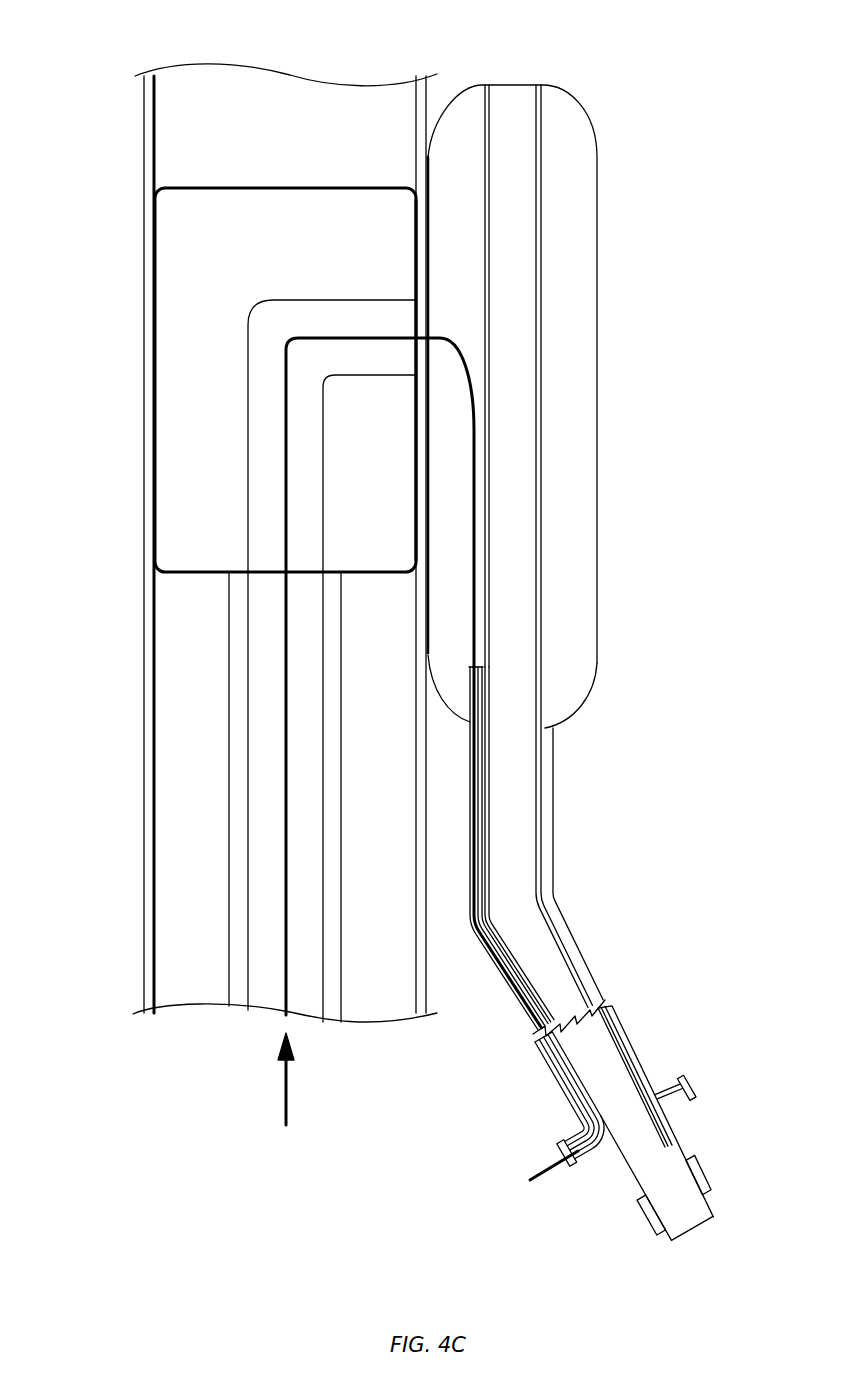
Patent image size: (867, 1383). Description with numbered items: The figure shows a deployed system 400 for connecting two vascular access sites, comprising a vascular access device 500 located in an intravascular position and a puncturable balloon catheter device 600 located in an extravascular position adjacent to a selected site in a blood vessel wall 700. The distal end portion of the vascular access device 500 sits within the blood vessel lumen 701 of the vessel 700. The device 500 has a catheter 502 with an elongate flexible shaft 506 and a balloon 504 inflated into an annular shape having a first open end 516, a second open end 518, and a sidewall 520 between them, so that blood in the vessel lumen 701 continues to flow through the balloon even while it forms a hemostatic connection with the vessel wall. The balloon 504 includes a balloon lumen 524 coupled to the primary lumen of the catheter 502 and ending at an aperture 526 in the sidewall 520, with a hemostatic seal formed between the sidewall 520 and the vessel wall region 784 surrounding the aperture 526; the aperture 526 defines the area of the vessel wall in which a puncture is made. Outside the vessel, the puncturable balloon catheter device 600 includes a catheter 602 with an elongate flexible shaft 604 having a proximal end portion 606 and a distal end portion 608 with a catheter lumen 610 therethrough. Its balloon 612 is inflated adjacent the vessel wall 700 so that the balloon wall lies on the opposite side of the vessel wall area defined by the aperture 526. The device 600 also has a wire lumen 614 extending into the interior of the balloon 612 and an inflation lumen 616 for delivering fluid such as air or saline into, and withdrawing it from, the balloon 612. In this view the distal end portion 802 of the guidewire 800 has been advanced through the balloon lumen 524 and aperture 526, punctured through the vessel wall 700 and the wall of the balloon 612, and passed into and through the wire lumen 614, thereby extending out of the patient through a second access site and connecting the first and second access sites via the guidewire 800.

The system 400 is at (654, 55).
The vascular access device 500 is at (184, 620).
The catheter 502 is at (221, 734).
The balloon 504 is at (190, 441).
The elongate flexible shaft 506 is at (268, 687).
The first open end 516 is at (355, 584).
The second open end 518 is at (273, 181).
The sidewall 520 is at (414, 511).
The balloon lumen 524 is at (275, 331).
The aperture 526 is at (398, 325).
The puncturable balloon catheter device 600 is at (596, 737).
The catheter 602 is at (615, 1177).
The elongate flexible shaft 604 is at (541, 421).
The proximal end portion 606 is at (737, 1110).
The distal end portion 608 is at (641, 335).
The catheter lumen 610 is at (513, 788).
The balloon 612 is at (575, 264).
The wire lumen 614 is at (478, 816).
The inflation lumen 616 is at (553, 906).
The blood vessel wall 700 is at (148, 856).
The blood vessel lumen 701 is at (185, 123).
The vessel wall region 784 is at (414, 248).
The guidewire 800 is at (283, 536).
The distal end portion 802 is at (540, 1171).